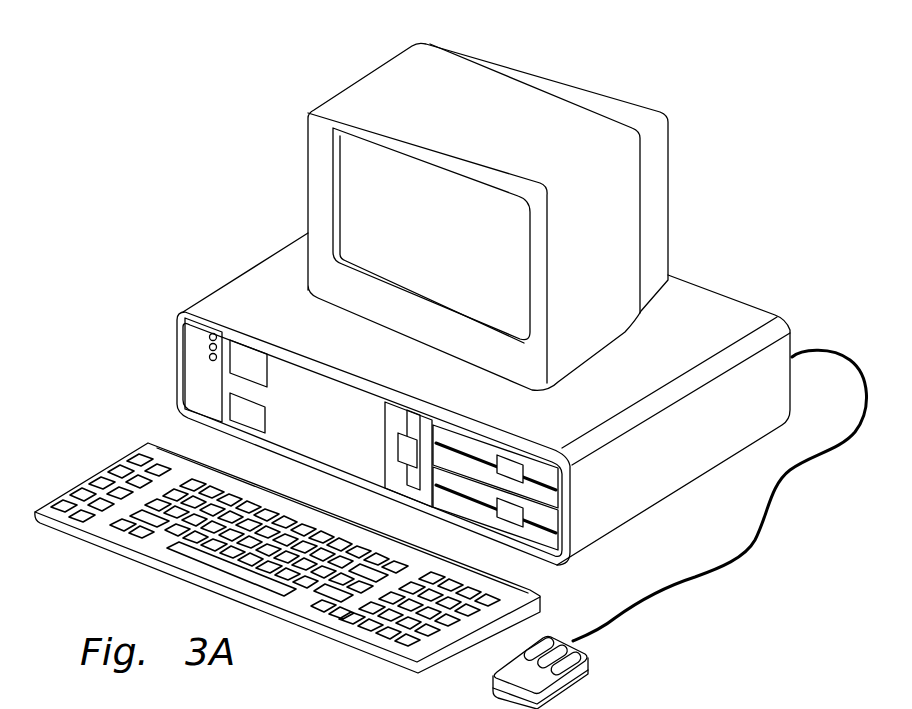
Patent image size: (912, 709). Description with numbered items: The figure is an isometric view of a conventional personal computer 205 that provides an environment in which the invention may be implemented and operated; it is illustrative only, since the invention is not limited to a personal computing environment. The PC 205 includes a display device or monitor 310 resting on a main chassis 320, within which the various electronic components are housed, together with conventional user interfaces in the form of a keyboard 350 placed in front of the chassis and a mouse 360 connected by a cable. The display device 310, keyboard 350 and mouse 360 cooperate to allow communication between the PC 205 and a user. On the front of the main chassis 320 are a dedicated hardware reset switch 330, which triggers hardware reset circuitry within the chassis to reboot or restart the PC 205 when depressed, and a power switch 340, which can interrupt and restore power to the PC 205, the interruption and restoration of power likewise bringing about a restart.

The conventional computer 205 is at (603, 56).
The display device 310 is at (358, 88).
The main chassis 320 is at (738, 312).
The dedicated hardware reset switch 330 is at (228, 387).
The power switch 340 is at (240, 350).
The keyboard 350 is at (83, 493).
The mouse 360 is at (575, 677).